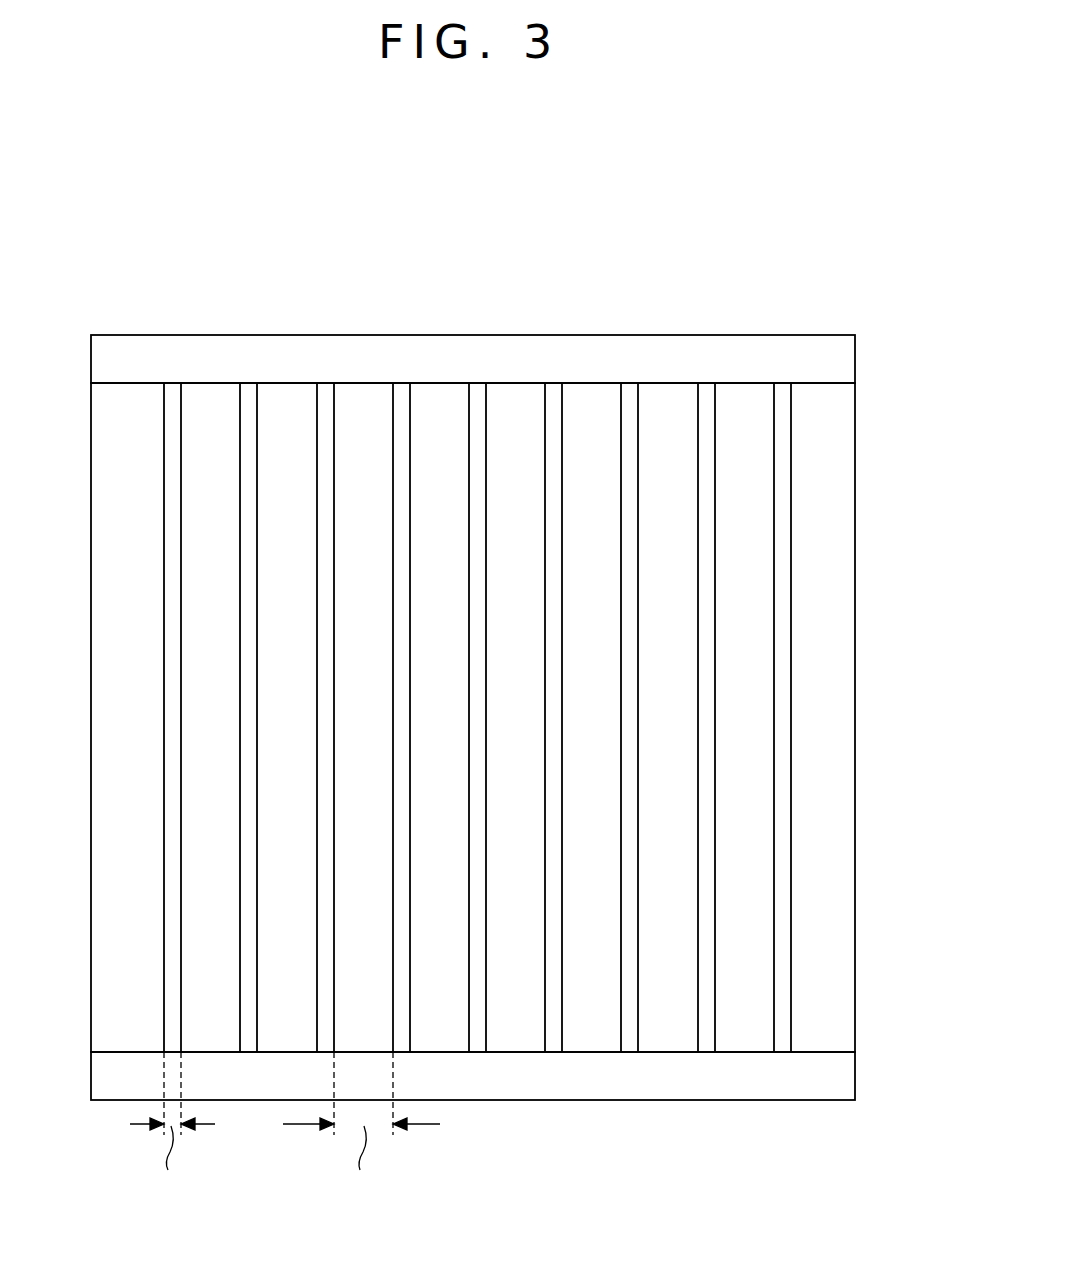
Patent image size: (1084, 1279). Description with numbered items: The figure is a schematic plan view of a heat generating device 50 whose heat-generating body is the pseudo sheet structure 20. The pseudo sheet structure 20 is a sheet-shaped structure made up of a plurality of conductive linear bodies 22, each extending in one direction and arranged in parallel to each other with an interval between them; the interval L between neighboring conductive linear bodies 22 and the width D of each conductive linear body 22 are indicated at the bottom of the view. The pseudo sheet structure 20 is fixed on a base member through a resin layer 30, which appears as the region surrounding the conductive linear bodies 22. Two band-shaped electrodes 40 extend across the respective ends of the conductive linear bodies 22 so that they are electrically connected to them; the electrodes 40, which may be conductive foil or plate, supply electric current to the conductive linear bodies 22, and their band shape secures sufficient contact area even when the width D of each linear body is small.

The heat generating device 50 is at (767, 135).
The pseudo sheet structure 20 is at (730, 272).
The conductive linear bodies 22 is at (254, 418).
The resin layer 30 is at (832, 442).
The electrodes 40 is at (833, 363).